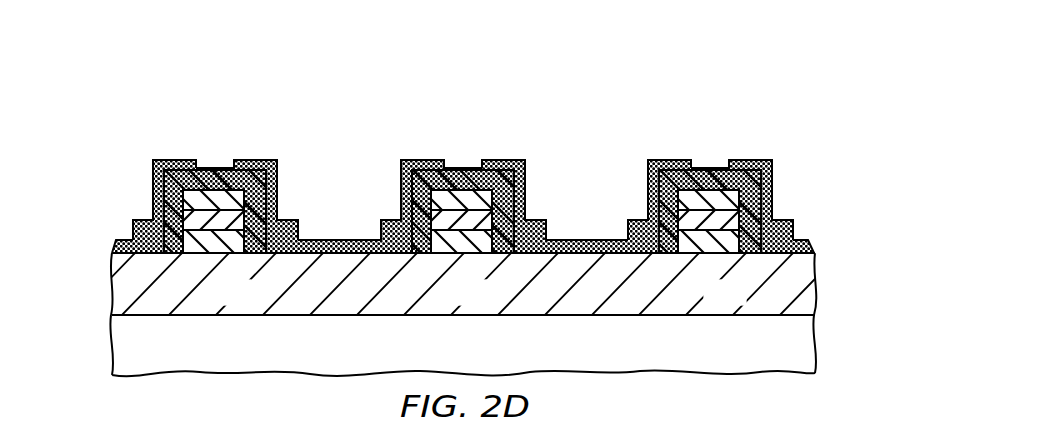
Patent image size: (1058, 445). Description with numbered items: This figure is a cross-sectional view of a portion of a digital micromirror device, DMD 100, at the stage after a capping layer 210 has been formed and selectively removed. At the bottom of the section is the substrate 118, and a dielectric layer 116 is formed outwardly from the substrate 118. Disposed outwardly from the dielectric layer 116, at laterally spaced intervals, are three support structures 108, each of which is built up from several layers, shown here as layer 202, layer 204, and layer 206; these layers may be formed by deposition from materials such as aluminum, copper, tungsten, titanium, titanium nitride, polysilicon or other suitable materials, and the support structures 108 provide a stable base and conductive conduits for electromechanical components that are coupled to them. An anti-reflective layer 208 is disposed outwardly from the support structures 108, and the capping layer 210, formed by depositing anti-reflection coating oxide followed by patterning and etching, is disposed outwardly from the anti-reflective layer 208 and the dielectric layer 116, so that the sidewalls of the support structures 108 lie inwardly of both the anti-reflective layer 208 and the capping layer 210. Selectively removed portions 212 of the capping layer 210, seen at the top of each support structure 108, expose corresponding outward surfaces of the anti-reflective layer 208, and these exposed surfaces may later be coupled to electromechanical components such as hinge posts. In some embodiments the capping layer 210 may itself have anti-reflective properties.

The DMD 100 is at (582, 76).
The support structures 108 is at (179, 118).
The dielectric layer 116 is at (112, 297).
The substrate 118 is at (482, 355).
The layer 202 is at (217, 243).
The layer 204 is at (186, 215).
The layer 206 is at (180, 197).
The anti-reflective layer 208 is at (286, 234).
The capping layer 210 is at (257, 160).
The selectively removed portions 212 is at (237, 150).